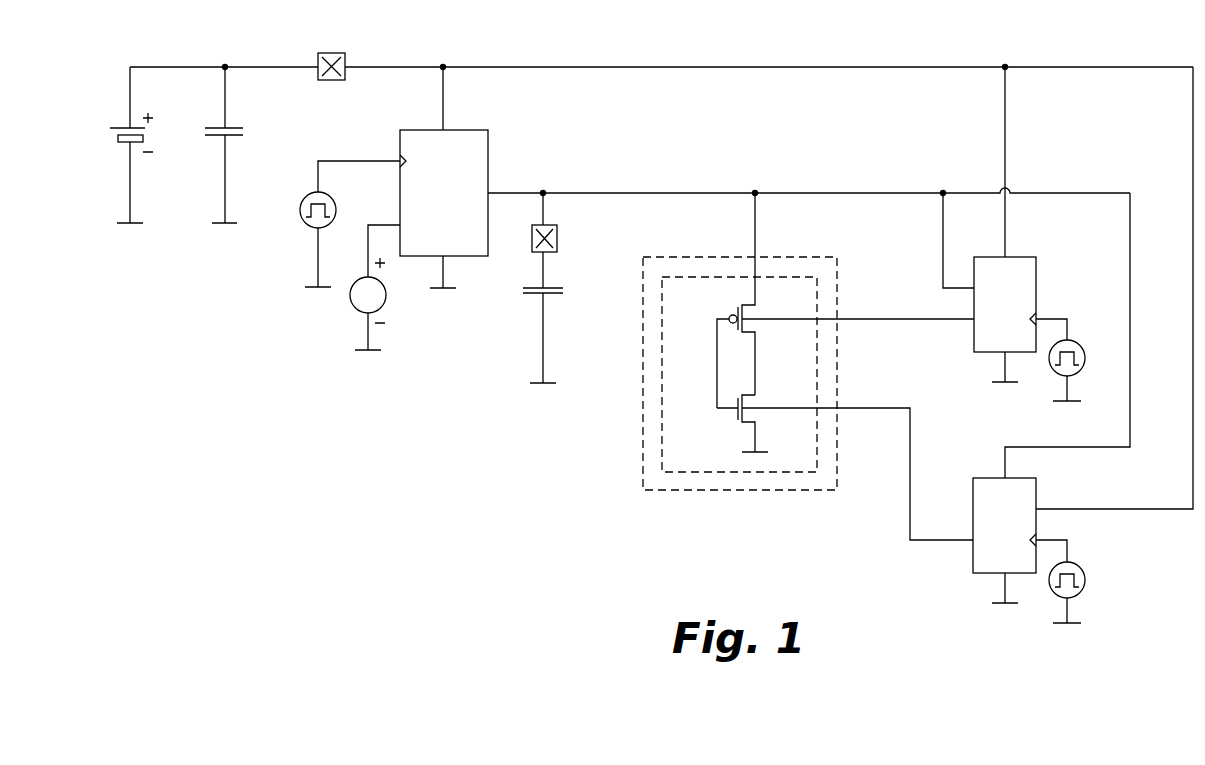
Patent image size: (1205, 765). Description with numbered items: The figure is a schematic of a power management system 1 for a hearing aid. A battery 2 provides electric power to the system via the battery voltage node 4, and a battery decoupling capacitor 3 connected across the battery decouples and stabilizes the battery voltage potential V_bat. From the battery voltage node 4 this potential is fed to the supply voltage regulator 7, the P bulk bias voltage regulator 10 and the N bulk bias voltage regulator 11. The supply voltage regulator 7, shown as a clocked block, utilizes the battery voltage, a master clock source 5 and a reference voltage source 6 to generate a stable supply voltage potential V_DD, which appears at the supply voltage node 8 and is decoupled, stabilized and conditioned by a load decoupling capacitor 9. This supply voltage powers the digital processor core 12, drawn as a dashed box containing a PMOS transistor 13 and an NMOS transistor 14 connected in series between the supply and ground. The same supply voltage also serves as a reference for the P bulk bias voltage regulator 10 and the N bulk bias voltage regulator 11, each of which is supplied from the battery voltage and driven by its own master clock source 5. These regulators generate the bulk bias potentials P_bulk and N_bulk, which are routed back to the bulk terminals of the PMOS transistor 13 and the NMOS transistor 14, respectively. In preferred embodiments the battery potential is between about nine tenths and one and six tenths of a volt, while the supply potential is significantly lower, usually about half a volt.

The power management system 1 is at (757, 46).
The battery 2 is at (118, 140).
The battery decoupling capacitor 3 is at (220, 136).
The battery voltage node 4 is at (334, 52).
The master clock source 5 is at (300, 215).
The reference voltage source 6 is at (350, 292).
The supply voltage regulator 7 is at (455, 258).
The supply voltage node 8 is at (558, 240).
The load decoupling capacitor 9 is at (535, 295).
The P bulk bias voltage regulator 10 is at (1036, 275).
The N bulk bias voltage regulator 11 is at (1036, 496).
The digital processor core 12 is at (838, 290).
The PMOS transistor 13 is at (757, 327).
The NMOS transistor 14 is at (757, 415).